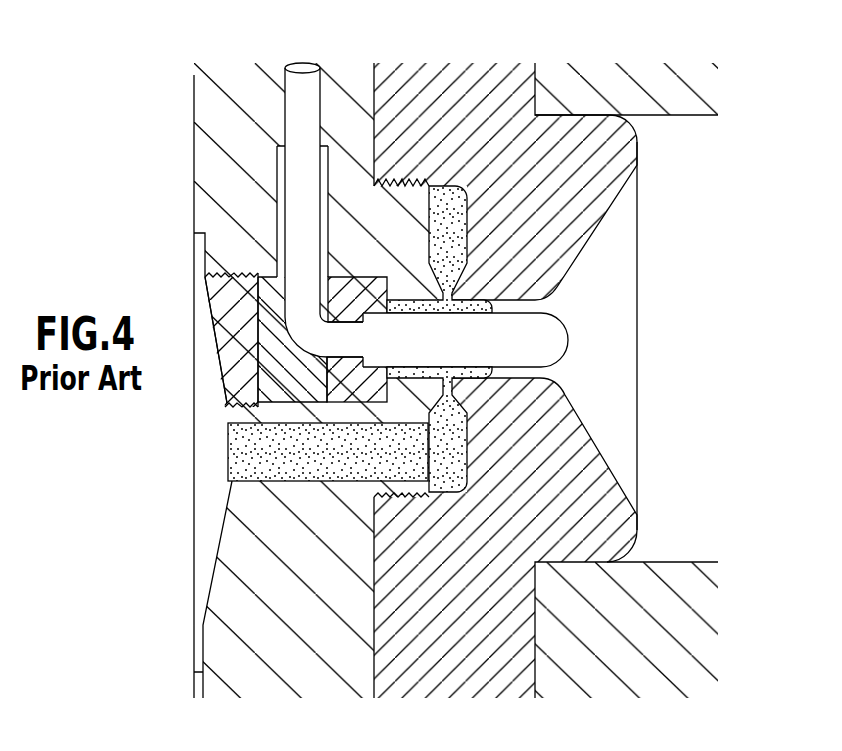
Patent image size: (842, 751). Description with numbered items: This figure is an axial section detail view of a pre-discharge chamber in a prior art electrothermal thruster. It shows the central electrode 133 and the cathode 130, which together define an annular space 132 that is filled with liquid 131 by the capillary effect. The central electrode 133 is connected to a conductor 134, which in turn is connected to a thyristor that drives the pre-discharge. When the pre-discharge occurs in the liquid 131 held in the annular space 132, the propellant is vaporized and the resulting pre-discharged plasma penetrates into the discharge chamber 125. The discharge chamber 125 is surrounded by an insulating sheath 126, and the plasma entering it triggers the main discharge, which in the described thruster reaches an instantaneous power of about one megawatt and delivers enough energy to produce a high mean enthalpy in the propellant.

The discharge chamber 125 is at (782, 347).
The insulating sheath 126 is at (687, 115).
The cathode 130 is at (575, 443).
The liquid 131 is at (453, 232).
The annular space 132 is at (448, 383).
The central electrode 133 is at (540, 330).
The conductor 134 is at (300, 66).